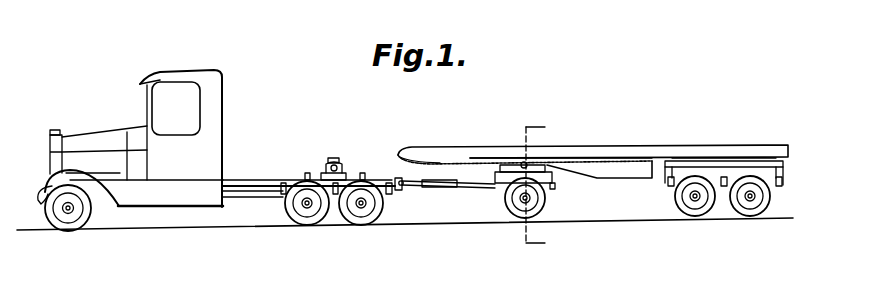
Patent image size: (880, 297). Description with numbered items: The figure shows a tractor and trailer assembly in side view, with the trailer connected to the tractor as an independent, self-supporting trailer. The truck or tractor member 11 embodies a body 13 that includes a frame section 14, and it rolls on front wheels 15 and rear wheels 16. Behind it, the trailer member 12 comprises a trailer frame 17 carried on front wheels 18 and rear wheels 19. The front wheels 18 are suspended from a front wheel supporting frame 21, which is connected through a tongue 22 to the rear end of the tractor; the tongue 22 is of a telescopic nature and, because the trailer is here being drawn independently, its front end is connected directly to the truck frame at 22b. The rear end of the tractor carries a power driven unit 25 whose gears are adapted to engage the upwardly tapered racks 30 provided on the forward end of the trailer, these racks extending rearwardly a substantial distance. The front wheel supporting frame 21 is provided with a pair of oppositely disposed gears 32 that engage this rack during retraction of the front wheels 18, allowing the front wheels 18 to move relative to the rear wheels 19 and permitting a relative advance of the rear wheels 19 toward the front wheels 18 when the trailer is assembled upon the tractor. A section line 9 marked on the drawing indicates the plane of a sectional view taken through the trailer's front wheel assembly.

The section line 9- 9 is at (551, 245).
The truck or tractor member 11 is at (247, 116).
The trailer member 12 is at (608, 101).
The body 13 is at (223, 152).
The frame section 14 is at (250, 180).
The front wheels 15 is at (72, 221).
The rear wheels 16 is at (311, 217).
The trailer frame 17 is at (598, 151).
The front wheels 18 is at (518, 208).
The rear wheels 19 is at (700, 208).
The front wheel supporting frame 21 is at (553, 172).
The tongue 22 is at (456, 189).
The tongue connection to truck frame 22b is at (399, 188).
The power driven unit 25 is at (344, 150).
The upwardly tapered racks 30 is at (402, 157).
The gears 32 is at (513, 165).